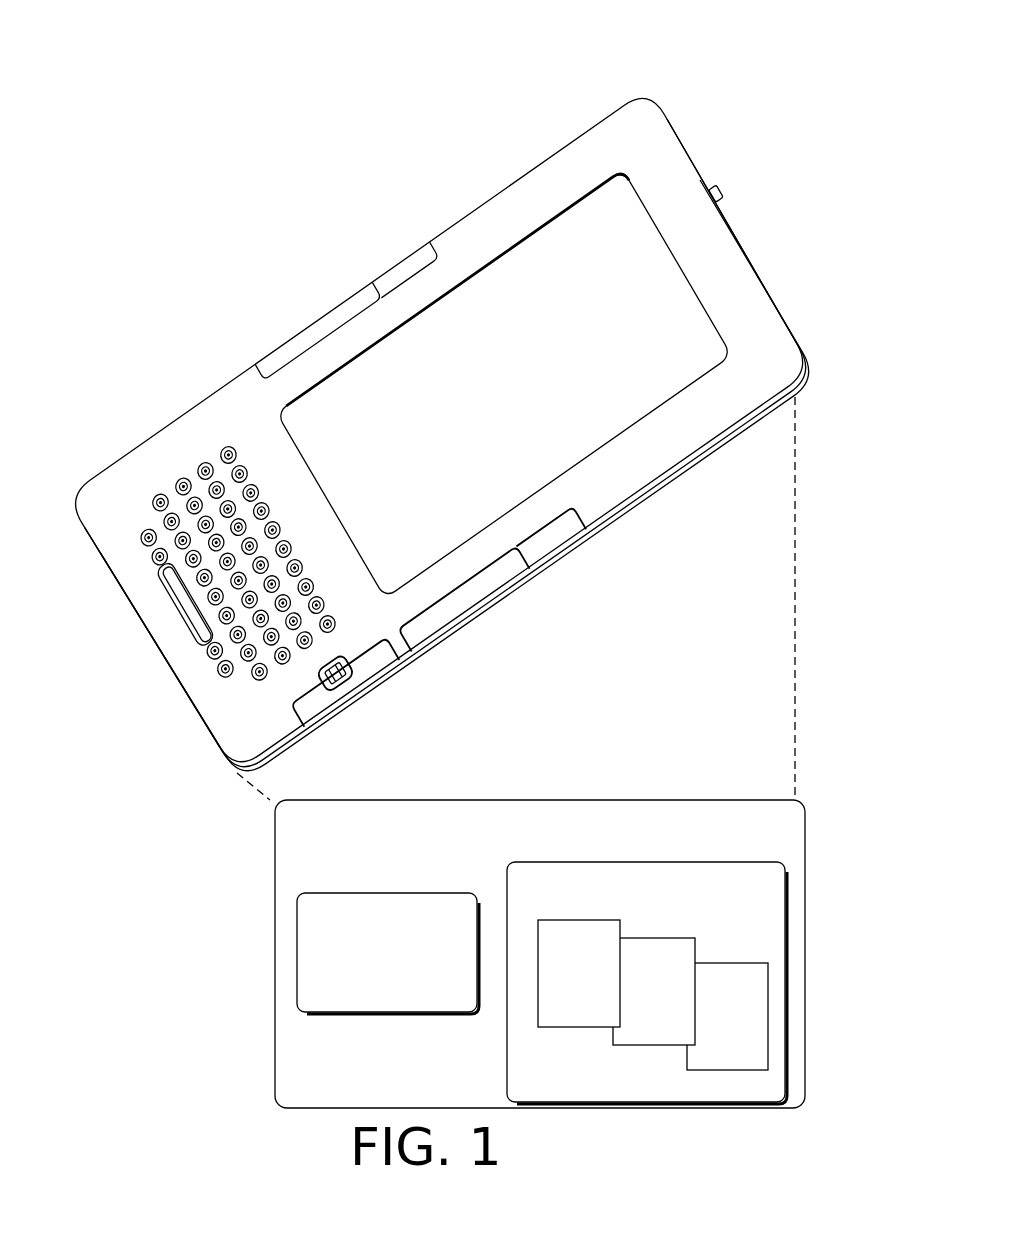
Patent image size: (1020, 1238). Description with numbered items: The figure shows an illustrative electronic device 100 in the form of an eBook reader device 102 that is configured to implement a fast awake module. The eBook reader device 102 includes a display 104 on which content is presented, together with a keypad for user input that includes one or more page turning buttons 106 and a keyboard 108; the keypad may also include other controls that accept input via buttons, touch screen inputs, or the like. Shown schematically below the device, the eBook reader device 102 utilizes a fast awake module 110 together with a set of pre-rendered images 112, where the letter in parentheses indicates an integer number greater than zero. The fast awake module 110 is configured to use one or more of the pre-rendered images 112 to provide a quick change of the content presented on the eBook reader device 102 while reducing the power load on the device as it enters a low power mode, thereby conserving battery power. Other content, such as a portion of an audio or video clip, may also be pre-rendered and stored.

The electronic device 100 is at (730, 62).
The eBook reader device 102 is at (540, 954).
The display 104 is at (617, 207).
The page turning buttons 106 is at (328, 327).
The keyboard 108 is at (192, 500).
The fast awake module 110 is at (388, 953).
The pre-rendered images 112 is at (647, 983).